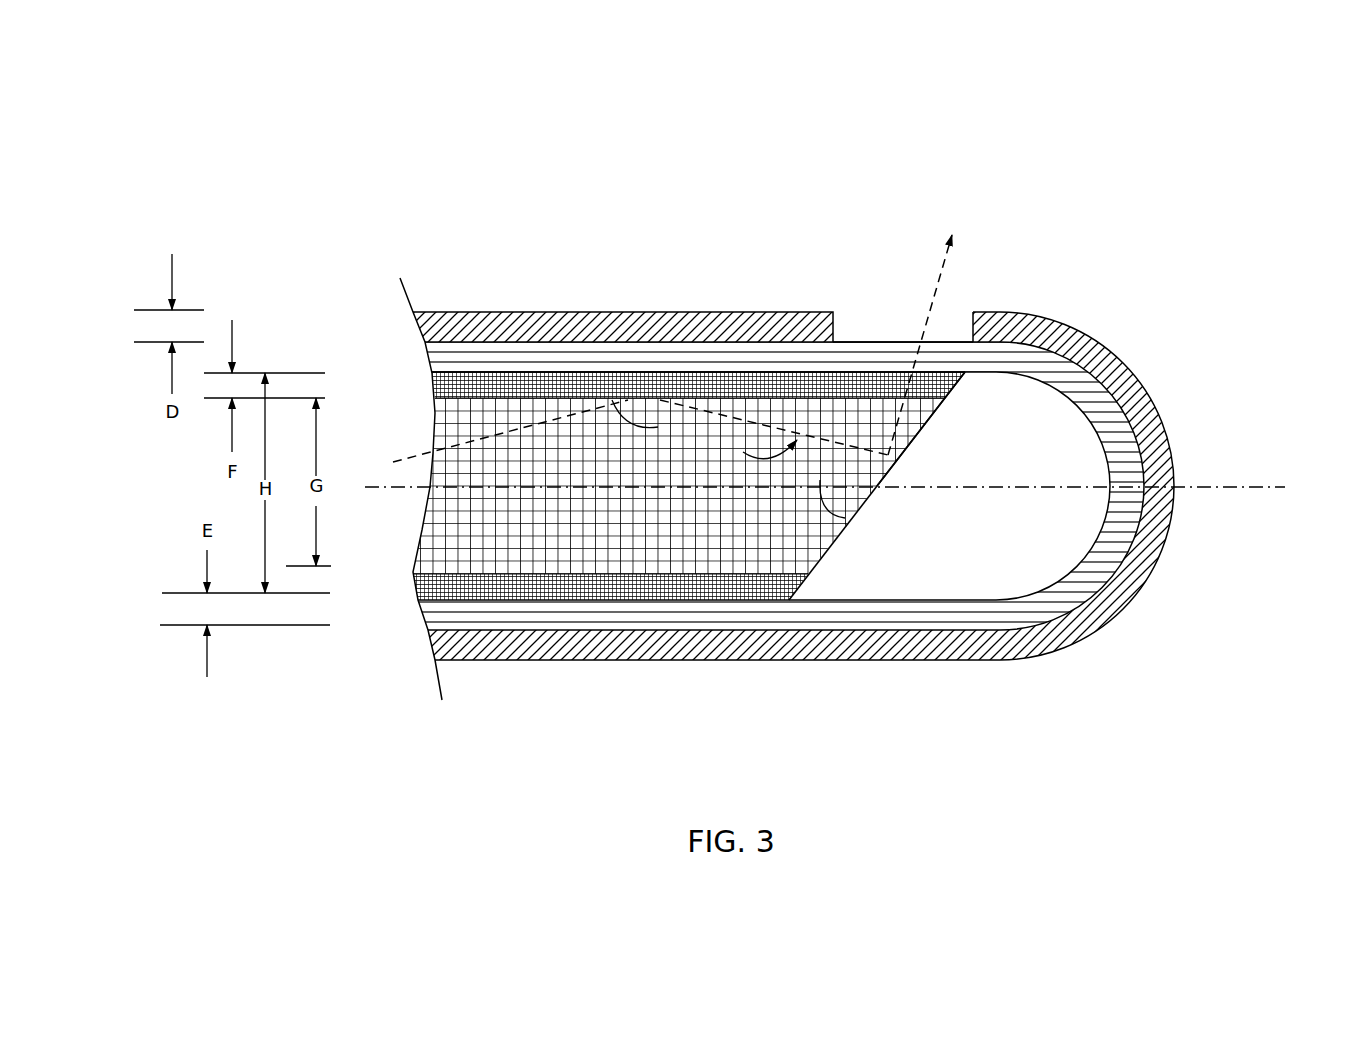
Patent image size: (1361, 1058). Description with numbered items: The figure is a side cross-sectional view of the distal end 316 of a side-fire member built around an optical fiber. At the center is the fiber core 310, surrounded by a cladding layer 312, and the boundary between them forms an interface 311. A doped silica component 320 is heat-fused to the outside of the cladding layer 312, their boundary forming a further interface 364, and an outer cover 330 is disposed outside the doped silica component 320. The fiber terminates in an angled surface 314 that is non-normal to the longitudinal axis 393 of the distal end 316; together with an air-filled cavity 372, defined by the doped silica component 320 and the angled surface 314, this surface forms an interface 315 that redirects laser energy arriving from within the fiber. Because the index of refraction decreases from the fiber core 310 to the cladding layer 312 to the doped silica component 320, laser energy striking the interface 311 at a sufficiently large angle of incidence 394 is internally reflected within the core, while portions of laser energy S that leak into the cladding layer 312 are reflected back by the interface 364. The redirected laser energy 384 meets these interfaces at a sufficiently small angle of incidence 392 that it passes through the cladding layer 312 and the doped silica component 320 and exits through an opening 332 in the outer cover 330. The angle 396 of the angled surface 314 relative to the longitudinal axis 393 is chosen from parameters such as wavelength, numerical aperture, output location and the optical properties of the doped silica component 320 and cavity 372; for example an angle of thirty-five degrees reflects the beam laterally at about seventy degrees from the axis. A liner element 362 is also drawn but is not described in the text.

The fiber core 310 is at (473, 415).
The interface 311 is at (638, 388).
The cladding layer 312 is at (600, 383).
The angled surface 314 is at (834, 545).
The interface 315 is at (870, 503).
The distal end 316 is at (800, 152).
The doped silica component 320 is at (1055, 378).
The outer cover 330 is at (803, 640).
The opening 332 is at (955, 317).
The inner liner 362 is at (567, 600).
The interface 364 is at (653, 372).
The air-filled cavity 372 is at (1050, 457).
The redirected laser energy 384 is at (930, 292).
The angle of incidence 392 is at (910, 400).
The longitudinal axis 393 is at (1210, 493).
The angle of incidence 394 is at (628, 420).
The angle 396 is at (830, 517).
The laser energy S is at (818, 377).